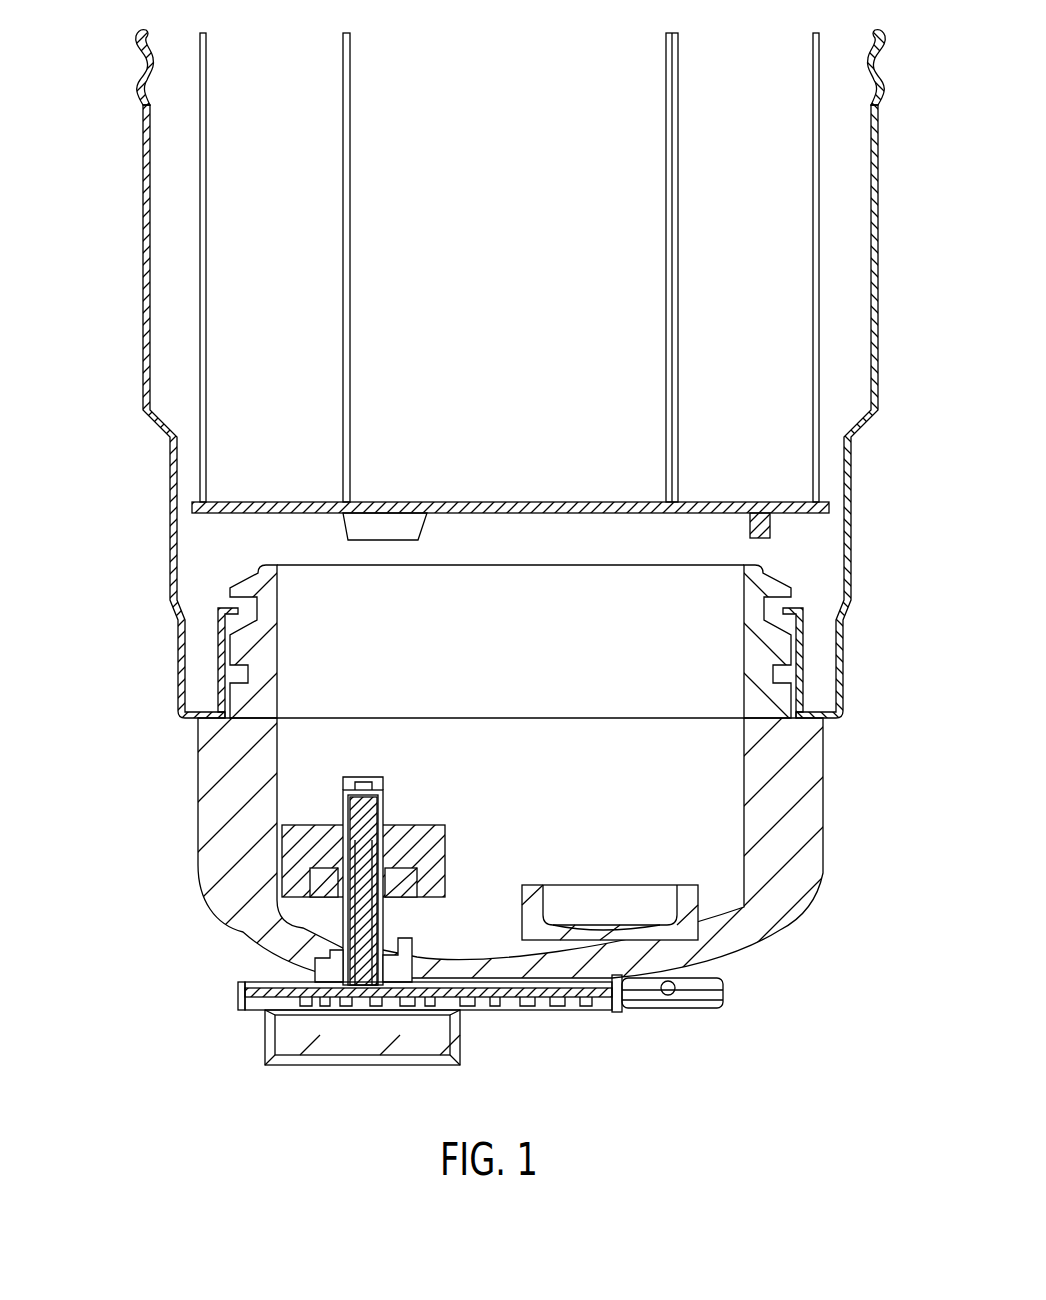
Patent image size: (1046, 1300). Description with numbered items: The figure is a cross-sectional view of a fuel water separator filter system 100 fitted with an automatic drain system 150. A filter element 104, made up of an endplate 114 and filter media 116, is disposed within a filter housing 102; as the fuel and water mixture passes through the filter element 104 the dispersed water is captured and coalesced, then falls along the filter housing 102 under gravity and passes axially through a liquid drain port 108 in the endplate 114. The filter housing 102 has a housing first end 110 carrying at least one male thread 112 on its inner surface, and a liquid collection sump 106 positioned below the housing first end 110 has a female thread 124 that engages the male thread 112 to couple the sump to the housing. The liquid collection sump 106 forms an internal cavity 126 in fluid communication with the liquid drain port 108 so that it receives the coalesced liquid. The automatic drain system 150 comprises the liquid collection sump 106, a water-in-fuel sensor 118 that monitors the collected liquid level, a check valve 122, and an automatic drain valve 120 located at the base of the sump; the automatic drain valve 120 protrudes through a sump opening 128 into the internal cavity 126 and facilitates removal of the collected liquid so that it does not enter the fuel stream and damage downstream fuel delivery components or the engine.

The FWS filter system 100 is at (113, 138).
The filter housing 102 is at (879, 345).
The filter element 104 is at (792, 268).
The liquid collection sump 106 is at (823, 803).
The liquid drain port 108 is at (352, 517).
The housing first end 110 is at (868, 676).
The male thread 112 is at (232, 622).
The endplate 114 is at (820, 518).
The filter media 116 is at (224, 290).
The WIF sensor 118 is at (463, 838).
The automatic drain valve 120 is at (574, 1036).
The check valve 122 is at (681, 878).
The female thread 124 is at (262, 680).
The internal cavity 126 is at (702, 688).
The sump opening 128 is at (322, 956).
The automatic drain system 150 is at (156, 786).